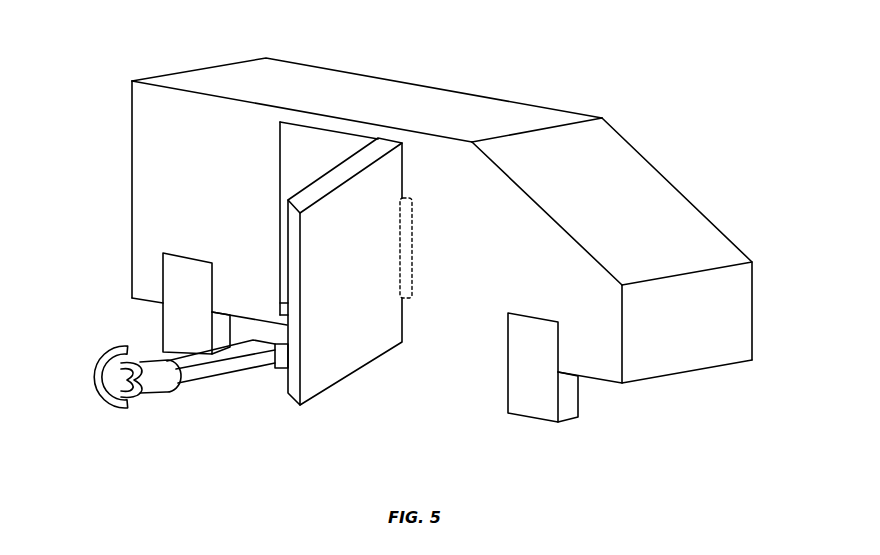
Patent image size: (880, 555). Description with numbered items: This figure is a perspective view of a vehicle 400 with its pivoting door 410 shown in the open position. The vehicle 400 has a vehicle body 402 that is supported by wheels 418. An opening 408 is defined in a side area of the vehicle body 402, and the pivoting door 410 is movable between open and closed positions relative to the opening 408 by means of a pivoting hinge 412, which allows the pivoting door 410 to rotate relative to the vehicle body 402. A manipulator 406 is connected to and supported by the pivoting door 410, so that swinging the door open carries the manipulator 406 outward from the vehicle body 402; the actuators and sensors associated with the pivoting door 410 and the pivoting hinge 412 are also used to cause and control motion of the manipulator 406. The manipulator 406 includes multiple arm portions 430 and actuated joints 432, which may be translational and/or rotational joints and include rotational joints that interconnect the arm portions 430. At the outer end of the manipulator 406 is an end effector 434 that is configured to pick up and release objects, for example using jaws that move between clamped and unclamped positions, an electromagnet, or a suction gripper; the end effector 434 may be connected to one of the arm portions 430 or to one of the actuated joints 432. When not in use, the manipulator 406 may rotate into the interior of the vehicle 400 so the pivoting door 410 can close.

The vehicle 400 is at (387, 252).
The vehicle body 402 is at (620, 134).
The manipulator 406 is at (167, 395).
The opening 408 is at (388, 253).
The pivoting door 410 is at (350, 373).
The pivoting hinge 412 is at (412, 228).
The wheels 418 is at (508, 402).
The arm portions 430 is at (182, 383).
The actuated joints 432 is at (265, 370).
The end effector 434 is at (123, 420).